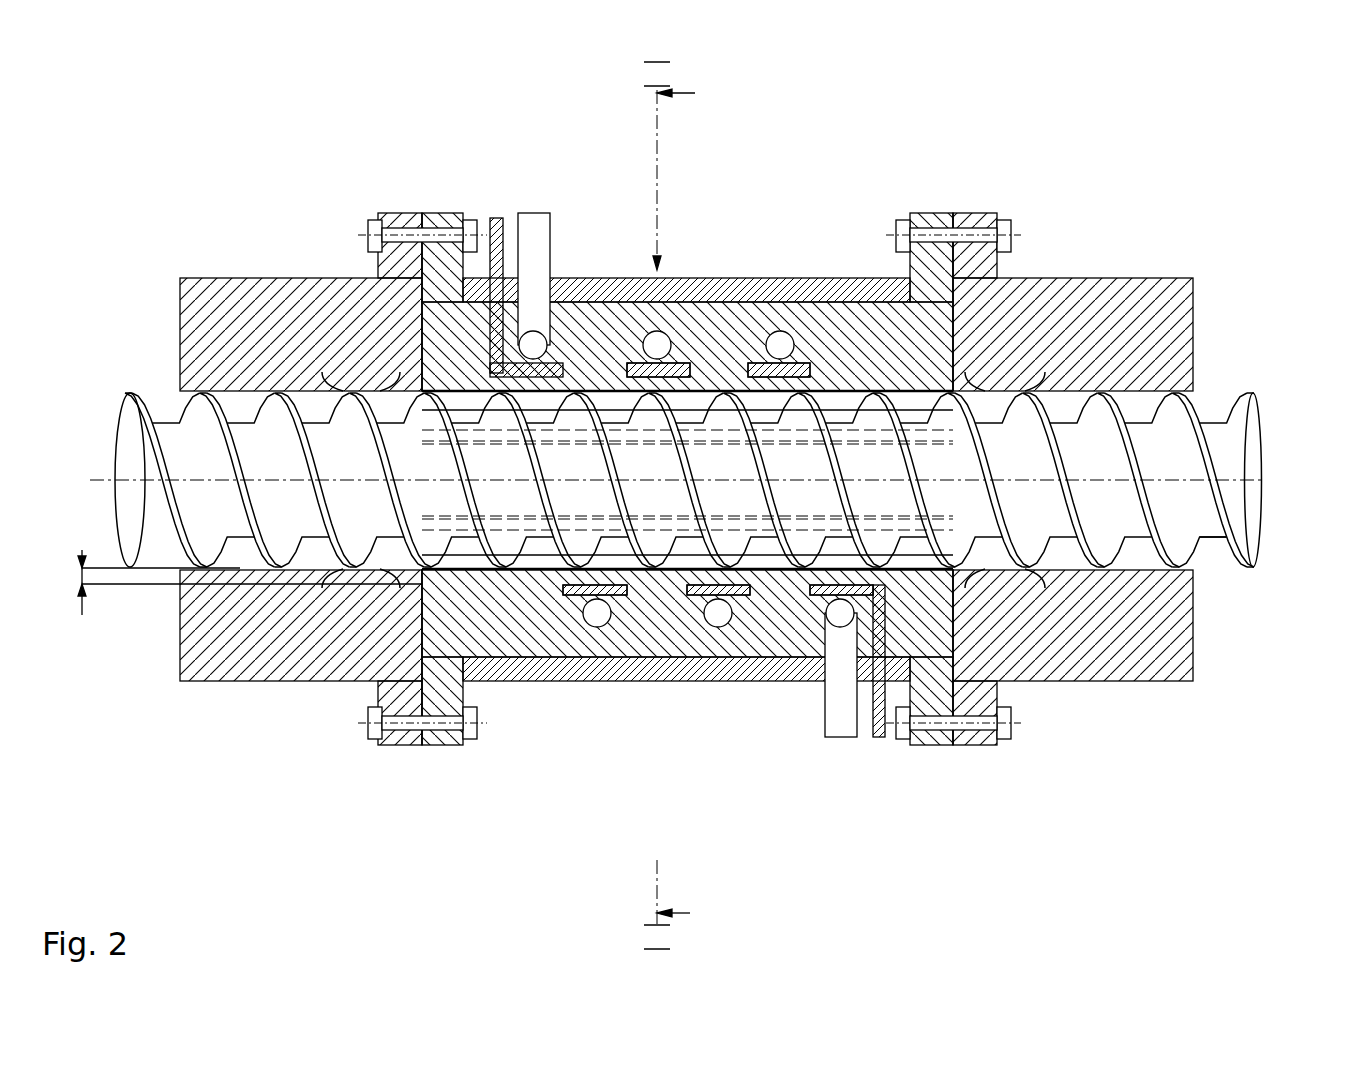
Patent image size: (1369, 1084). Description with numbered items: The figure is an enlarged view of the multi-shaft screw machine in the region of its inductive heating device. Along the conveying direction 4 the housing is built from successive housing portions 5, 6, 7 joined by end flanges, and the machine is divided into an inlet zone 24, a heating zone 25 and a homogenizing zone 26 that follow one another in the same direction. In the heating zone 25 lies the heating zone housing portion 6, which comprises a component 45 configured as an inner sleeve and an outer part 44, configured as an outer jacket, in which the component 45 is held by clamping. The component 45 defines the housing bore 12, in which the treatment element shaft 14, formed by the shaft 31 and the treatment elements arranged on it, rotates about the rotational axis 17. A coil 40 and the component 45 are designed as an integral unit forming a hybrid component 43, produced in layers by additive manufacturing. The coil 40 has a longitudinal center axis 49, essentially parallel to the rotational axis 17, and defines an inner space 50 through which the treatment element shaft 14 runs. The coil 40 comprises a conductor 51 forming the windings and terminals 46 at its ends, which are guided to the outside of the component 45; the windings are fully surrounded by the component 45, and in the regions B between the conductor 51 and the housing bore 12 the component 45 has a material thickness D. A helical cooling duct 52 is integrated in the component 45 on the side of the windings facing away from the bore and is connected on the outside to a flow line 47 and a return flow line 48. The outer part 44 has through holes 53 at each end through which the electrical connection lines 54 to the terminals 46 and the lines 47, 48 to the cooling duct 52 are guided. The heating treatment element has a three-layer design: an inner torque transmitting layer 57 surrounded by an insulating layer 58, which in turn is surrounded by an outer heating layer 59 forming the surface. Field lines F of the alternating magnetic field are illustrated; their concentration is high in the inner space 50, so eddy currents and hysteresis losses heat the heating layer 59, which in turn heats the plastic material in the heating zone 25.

The conveying direction 4 is at (812, 95).
The housing portion 5 is at (255, 285).
The heating zone housing portion 6 is at (667, 506).
The housing portion 7 is at (1082, 300).
The housing bore 12 is at (230, 562).
The treatment element shaft 14 is at (1262, 425).
The rotational axis 17 is at (1245, 478).
The inlet zone 24 is at (422, 853).
The heating zone 25 is at (422, 745).
The homogenizing zone 26 is at (953, 853).
The shaft 31 is at (1240, 488).
The coil 40 is at (700, 600).
The hybrid component 43 is at (781, 290).
The outer part 44 is at (740, 297).
The component 45 is at (932, 300).
The terminals 46 is at (487, 293).
The flow line 47 is at (530, 227).
The return flow line 48 is at (852, 730).
The longitudinal center axis 49 is at (190, 490).
The inner space 50 is at (700, 476).
The conductor 51 is at (812, 365).
The cooling duct 52 is at (781, 333).
The through holes 53 is at (372, 236).
The electrical connection lines 54 is at (493, 220).
The torque transmitting layer 57 is at (610, 398).
The insulating layer 58 is at (640, 437).
The heating layer 59 is at (497, 540).
The regions B is at (566, 372).
The material thickness D is at (237, 587).
The field lines F is at (378, 382).